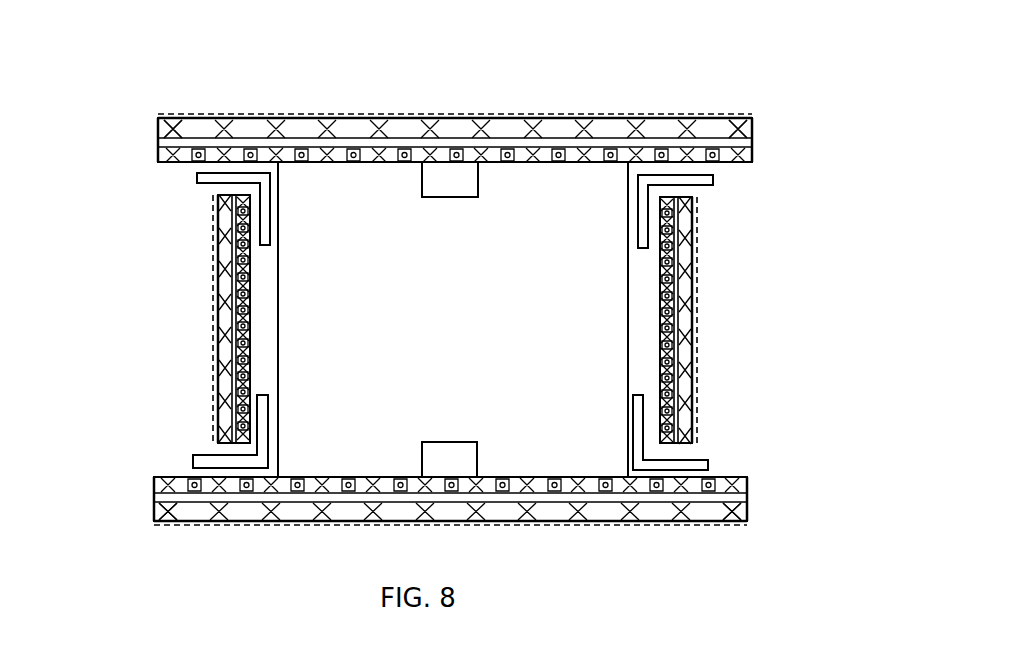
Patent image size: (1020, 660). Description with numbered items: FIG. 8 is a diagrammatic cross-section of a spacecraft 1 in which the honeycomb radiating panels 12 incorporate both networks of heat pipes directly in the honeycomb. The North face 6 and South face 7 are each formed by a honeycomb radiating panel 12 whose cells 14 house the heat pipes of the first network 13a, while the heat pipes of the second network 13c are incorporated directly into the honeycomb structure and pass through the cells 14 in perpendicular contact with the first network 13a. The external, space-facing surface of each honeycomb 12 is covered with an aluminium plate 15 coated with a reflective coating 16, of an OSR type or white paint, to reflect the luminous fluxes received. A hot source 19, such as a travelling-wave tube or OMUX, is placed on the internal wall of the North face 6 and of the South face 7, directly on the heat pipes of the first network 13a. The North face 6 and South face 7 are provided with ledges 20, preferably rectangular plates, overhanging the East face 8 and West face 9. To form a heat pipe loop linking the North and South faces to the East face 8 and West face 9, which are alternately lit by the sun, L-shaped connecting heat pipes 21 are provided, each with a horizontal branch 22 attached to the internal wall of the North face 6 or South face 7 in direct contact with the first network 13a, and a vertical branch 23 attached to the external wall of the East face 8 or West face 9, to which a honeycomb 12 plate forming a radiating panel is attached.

The spacecraft 1 is at (136, 120).
The North face 6 is at (538, 165).
The South face 7 is at (576, 479).
The East face 8 is at (626, 345).
The West face 9 is at (280, 312).
The honeycomb radiating panel 12 is at (458, 314).
The first network of heat pipes 13a is at (250, 153).
The second network of heat pipes 13c is at (340, 140).
The cells 14 is at (435, 135).
The aluminium plate 15 is at (611, 118).
The reflective coating 16 is at (527, 113).
The hot source 19 is at (453, 190).
The ledges 20 is at (158, 163).
The connecting heat pipes 21 is at (250, 216).
The horizontal branch 22 is at (203, 183).
The vertical branch 23 is at (266, 228).